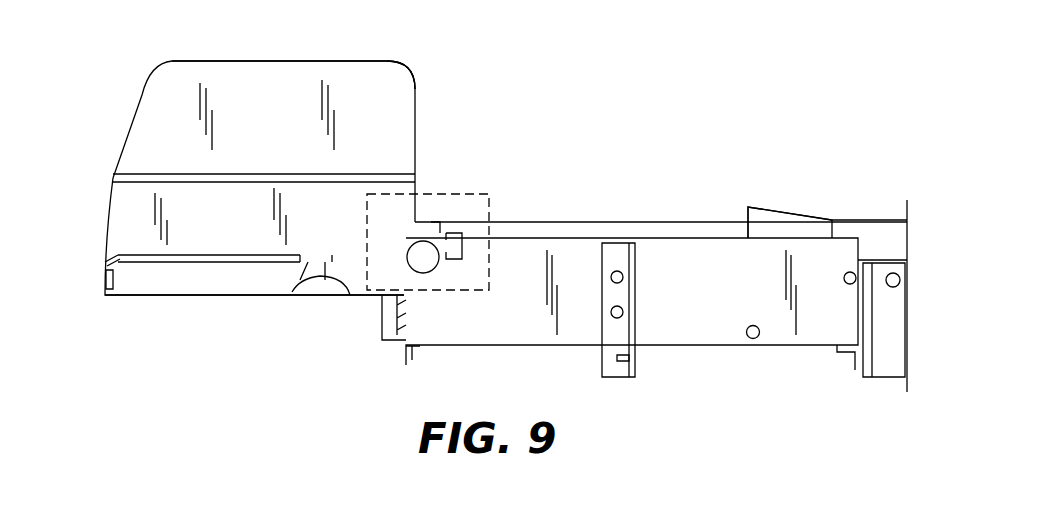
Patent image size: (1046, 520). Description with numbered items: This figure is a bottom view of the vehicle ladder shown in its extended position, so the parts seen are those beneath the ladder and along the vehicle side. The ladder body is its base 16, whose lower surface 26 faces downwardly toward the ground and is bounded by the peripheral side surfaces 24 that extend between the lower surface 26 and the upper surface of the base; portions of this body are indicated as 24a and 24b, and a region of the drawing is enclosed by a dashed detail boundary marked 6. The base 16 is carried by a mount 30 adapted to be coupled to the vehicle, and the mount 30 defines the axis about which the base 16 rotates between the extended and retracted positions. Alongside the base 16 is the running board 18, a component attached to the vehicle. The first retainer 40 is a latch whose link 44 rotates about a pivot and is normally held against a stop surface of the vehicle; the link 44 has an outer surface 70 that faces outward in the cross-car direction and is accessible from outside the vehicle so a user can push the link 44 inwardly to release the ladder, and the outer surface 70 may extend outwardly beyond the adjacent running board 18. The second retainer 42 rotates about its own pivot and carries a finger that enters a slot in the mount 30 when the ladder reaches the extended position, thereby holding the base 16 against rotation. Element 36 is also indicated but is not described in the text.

The detail region 6 is at (480, 194).
The base 16 is at (392, 95).
The running board 18 is at (787, 352).
The peripheral side surfaces 24 is at (140, 96).
The cushion top surface 24a is at (292, 61).
The cushion bottom surface 24b is at (178, 296).
The lower surface 26 is at (401, 75).
The mount 30 is at (431, 280).
The bracket plate 36 is at (432, 229).
The first retainer 40 is at (763, 181).
The second retainer 42 is at (466, 249).
The link 44 is at (782, 222).
The outer surface 70 is at (810, 218).